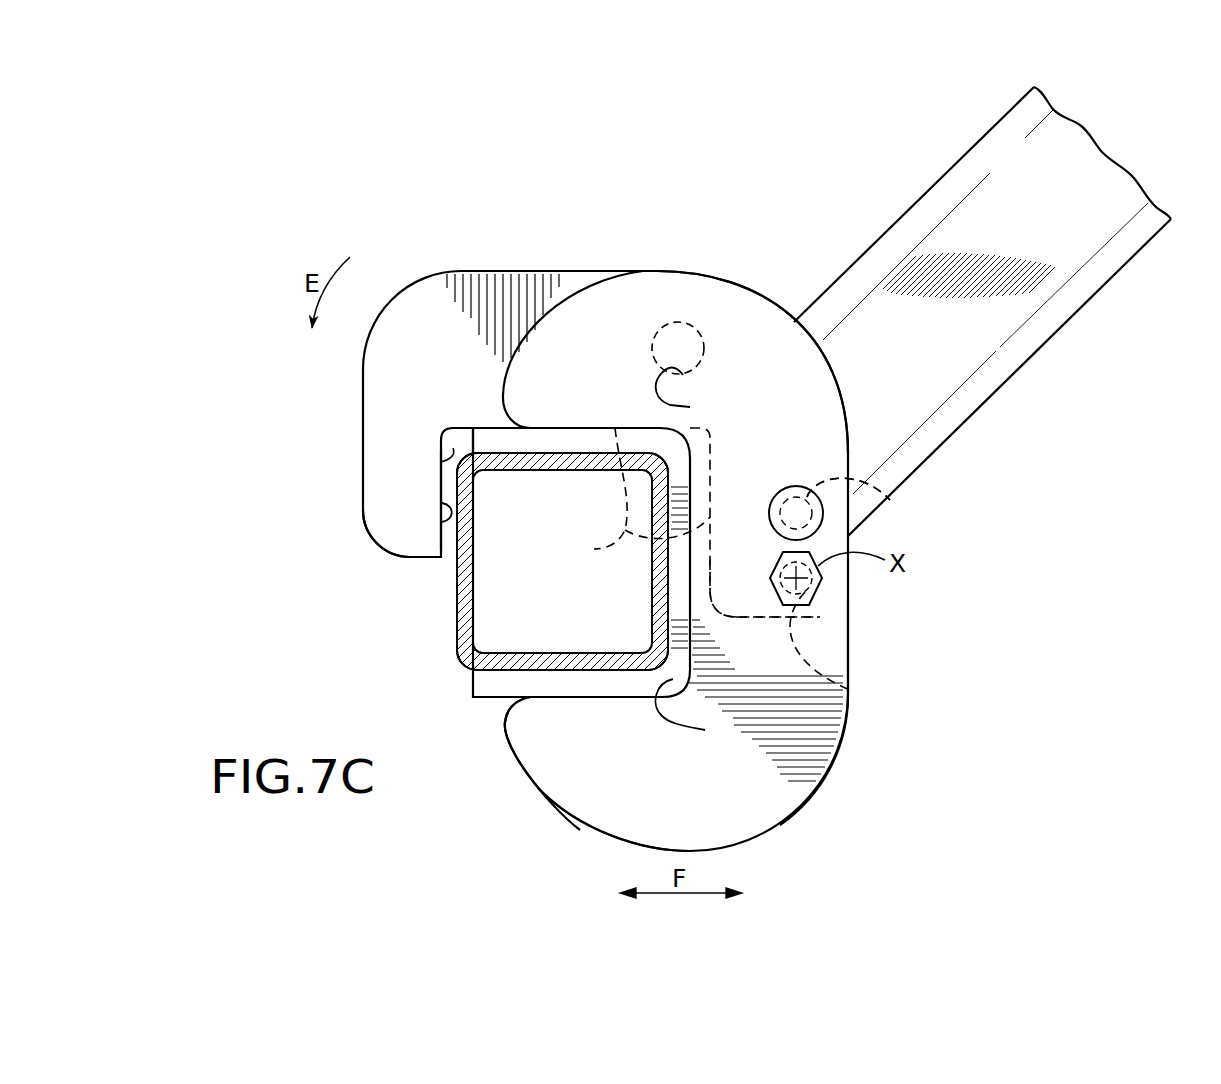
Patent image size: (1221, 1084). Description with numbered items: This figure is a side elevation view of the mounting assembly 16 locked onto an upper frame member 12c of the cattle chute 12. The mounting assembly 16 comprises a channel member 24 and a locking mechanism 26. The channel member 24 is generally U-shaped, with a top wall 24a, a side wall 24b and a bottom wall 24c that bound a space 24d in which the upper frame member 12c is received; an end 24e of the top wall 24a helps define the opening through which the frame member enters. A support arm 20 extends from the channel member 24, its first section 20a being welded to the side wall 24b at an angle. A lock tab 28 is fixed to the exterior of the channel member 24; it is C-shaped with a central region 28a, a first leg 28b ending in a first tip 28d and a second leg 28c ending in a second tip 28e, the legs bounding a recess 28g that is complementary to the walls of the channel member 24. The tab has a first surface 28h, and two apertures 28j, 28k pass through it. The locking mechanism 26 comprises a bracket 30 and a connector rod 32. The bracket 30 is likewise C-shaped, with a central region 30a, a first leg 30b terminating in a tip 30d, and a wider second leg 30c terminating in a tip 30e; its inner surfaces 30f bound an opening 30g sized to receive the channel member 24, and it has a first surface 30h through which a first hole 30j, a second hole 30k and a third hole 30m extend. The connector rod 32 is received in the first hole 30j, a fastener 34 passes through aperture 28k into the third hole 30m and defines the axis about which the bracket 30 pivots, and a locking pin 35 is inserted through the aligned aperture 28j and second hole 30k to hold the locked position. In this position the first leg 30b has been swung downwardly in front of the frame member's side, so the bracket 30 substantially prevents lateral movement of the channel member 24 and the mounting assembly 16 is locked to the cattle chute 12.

The cattle chute 12 is at (455, 607).
The upper frame member 12c is at (562, 561).
The mounting assembly 16 is at (862, 750).
The support arm 20 is at (984, 130).
The first section 20a is at (975, 163).
The channel member 24 is at (600, 705).
The top wall 24a is at (593, 438).
The side wall 24b is at (676, 585).
The bottom wall 24c is at (570, 682).
The space 24d is at (530, 670).
The end of top wall 24e is at (472, 442).
The locking mechanism 26 is at (630, 240).
The lock tab 28 is at (808, 802).
The central region 28a is at (818, 635).
The first leg 28b is at (732, 335).
The second leg 28c is at (597, 790).
The first tip 28d is at (503, 413).
The second tip 28e is at (503, 713).
The recess 28g is at (703, 713).
The first surface 28h is at (697, 802).
The aperture 28j is at (890, 500).
The aperture 28k is at (820, 608).
The bracket 30 is at (422, 272).
The central region 30a is at (573, 277).
The first leg 30b is at (402, 497).
The second leg 30c is at (748, 566).
The tip 30d is at (418, 558).
The tip 30e is at (850, 690).
The inner surface 30f is at (441, 522).
The opening 30g is at (440, 462).
The first surface 30h is at (455, 376).
The first hole 30j is at (696, 397).
The second hole 30k is at (848, 489).
The third hole 30m is at (723, 588).
The connector rod 32 is at (680, 325).
The fastener 34 is at (822, 593).
The locking pin 35 is at (805, 492).